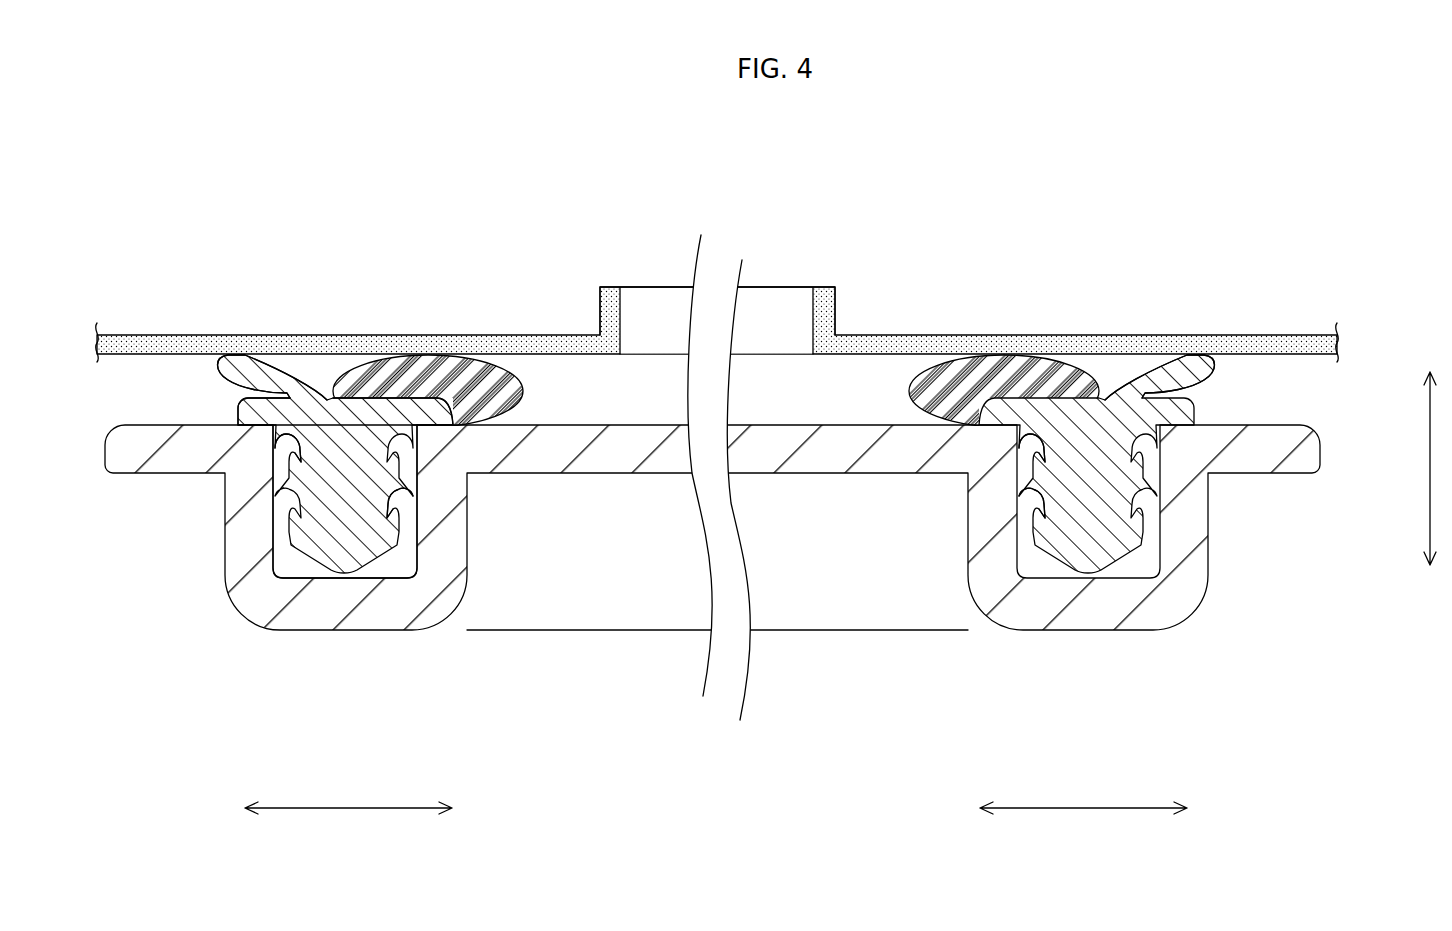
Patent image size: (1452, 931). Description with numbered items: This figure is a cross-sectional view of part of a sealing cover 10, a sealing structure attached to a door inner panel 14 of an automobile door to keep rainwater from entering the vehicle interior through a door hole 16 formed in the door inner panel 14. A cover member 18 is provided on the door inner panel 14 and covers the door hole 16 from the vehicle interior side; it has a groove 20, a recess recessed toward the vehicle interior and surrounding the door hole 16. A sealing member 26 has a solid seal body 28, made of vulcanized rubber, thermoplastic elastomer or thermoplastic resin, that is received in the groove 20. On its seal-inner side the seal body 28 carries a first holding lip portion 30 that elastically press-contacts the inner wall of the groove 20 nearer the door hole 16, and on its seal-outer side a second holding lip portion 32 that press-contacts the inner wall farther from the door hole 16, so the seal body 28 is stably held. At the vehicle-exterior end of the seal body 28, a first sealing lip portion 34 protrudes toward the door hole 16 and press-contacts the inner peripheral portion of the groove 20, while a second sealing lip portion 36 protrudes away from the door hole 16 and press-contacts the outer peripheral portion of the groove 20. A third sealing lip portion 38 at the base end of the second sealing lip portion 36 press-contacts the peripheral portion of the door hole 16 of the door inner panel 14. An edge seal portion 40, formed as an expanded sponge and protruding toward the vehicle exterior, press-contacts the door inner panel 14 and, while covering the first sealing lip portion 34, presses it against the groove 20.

The sealing cover 10 is at (769, 480).
The door inner panel 14 is at (717, 251).
The door hole 16 is at (813, 305).
The cover member 18 is at (712, 570).
The groove 20 is at (292, 568).
The sealing member 26 is at (1091, 365).
The seal body 28 is at (711, 443).
The first holding lip portion 30 is at (415, 500).
The second holding lip portion 32 is at (272, 440).
The first sealing lip portion 34 is at (418, 412).
The second sealing lip portion 36 is at (233, 411).
The third sealing lip portion 38 is at (1205, 362).
The edge seal portion 40 is at (445, 353).